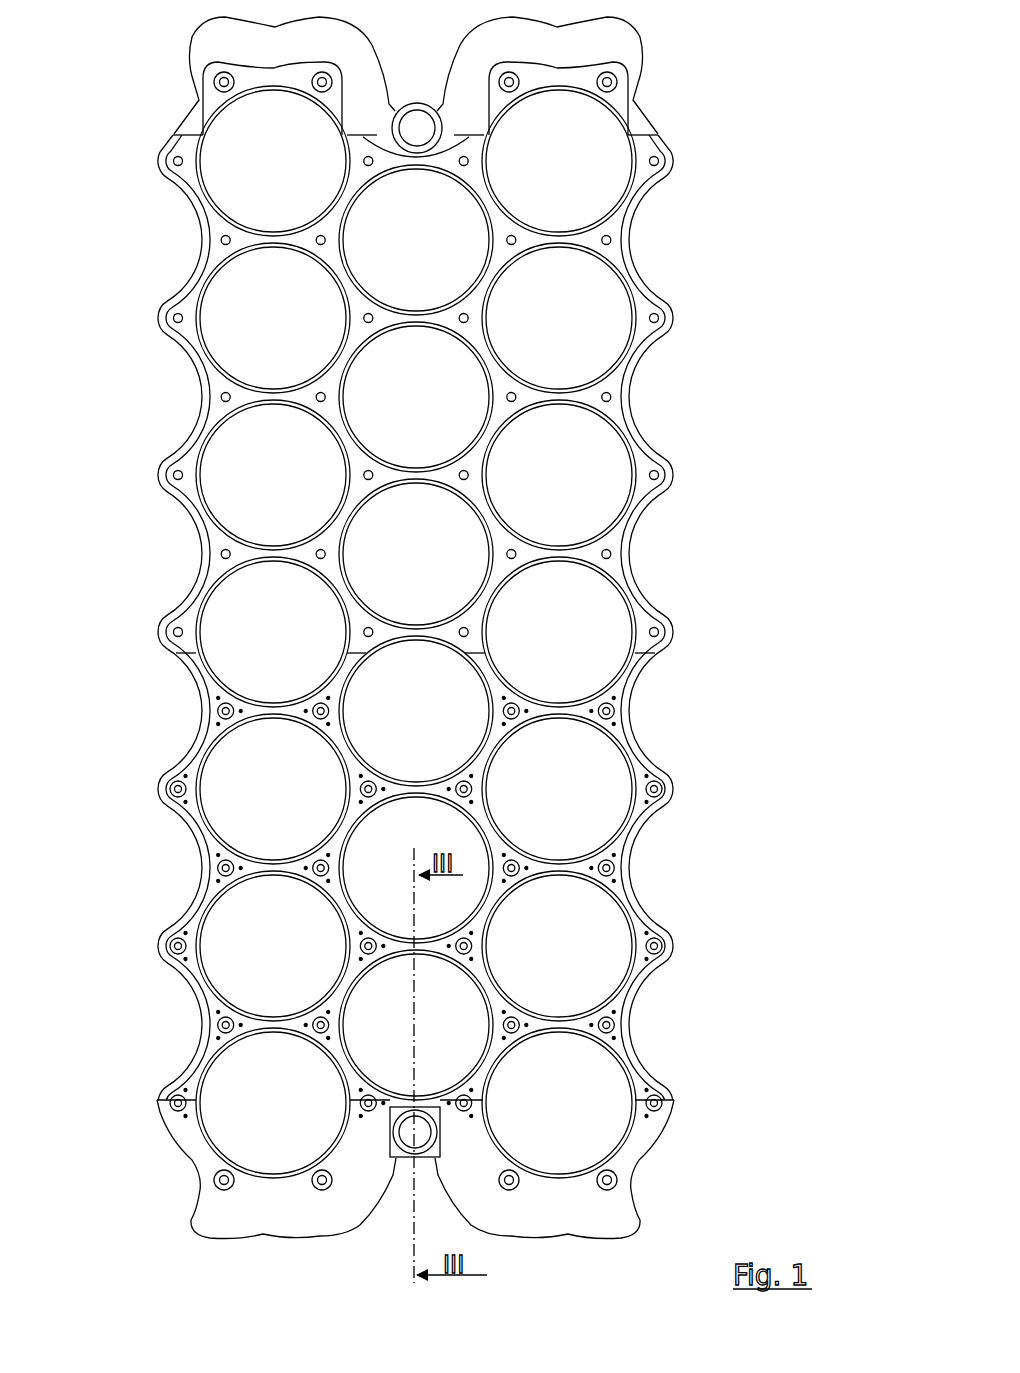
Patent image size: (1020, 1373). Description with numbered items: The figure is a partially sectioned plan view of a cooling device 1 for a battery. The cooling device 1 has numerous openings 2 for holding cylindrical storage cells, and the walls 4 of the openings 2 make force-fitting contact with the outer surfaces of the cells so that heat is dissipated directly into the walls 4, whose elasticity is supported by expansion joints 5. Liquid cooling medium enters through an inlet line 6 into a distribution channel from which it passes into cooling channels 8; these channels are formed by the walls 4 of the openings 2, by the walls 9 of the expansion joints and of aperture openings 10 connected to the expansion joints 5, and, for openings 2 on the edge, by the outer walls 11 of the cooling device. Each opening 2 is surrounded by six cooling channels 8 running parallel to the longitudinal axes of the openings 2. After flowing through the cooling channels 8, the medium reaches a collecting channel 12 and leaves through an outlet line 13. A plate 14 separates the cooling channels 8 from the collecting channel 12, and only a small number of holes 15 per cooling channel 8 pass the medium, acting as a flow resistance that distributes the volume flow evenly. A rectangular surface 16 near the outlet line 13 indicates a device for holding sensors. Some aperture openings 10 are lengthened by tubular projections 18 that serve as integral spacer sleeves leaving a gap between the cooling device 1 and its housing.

The cooling device 1 is at (131, 393).
The openings 2 is at (550, 471).
The walls 4 is at (617, 423).
The expansion joints 5 is at (633, 572).
The inlet line 6 is at (417, 126).
The cooling channels 8 is at (478, 493).
The walls of the expansion joints 9 is at (613, 397).
The aperture openings 10 is at (467, 475).
The outer walls 11 is at (661, 334).
The collecting channel 12 is at (618, 1002).
The outlet line 13 is at (411, 1158).
The plate 14 is at (415, 874).
The holes 15 is at (613, 880).
The rectangular surface 16 is at (390, 1158).
The tubular projections 18 is at (615, 1187).